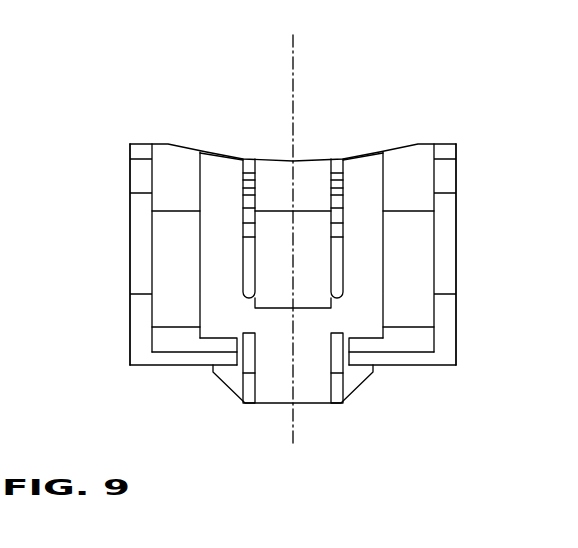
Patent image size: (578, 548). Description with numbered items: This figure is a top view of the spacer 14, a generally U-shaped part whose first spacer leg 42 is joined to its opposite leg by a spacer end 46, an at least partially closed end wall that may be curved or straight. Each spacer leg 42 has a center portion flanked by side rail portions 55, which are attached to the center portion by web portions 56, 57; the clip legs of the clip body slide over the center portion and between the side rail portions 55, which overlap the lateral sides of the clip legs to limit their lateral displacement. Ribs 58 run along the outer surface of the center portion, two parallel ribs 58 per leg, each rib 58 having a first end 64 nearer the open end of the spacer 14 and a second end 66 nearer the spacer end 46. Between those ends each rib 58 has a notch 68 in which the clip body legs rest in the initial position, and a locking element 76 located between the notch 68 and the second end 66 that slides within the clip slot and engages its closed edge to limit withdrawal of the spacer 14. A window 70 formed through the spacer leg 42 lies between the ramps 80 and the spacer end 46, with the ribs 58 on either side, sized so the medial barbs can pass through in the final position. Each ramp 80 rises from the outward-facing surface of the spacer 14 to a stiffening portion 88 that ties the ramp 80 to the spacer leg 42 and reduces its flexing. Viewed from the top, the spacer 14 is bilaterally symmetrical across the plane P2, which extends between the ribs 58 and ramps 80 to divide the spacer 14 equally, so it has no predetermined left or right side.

The spacer 14 is at (101, 72).
The plane P2 is at (295, 53).
The first spacer leg 42 is at (458, 326).
The spacer end 46 is at (413, 142).
The side rail portion 55 is at (130, 268).
The web portion 56 is at (167, 338).
The web portion 57 is at (167, 185).
The rib 58 is at (243, 275).
The first end 64 is at (245, 300).
The second end 66 is at (243, 160).
The notch 68 is at (248, 213).
The window 70 is at (316, 267).
The locking element 76 is at (242, 173).
The ramp 80 is at (329, 348).
The stiffening portion 88 is at (248, 392).